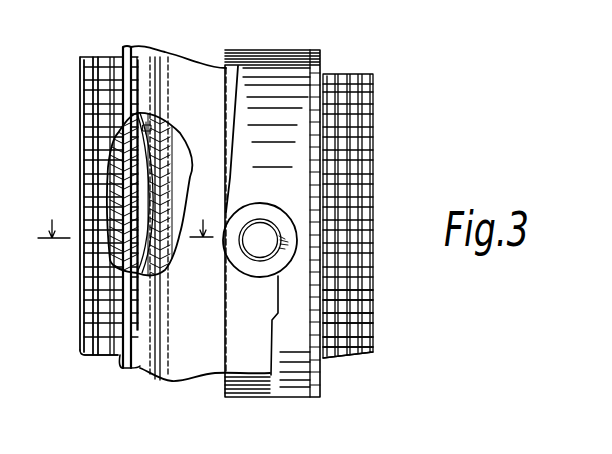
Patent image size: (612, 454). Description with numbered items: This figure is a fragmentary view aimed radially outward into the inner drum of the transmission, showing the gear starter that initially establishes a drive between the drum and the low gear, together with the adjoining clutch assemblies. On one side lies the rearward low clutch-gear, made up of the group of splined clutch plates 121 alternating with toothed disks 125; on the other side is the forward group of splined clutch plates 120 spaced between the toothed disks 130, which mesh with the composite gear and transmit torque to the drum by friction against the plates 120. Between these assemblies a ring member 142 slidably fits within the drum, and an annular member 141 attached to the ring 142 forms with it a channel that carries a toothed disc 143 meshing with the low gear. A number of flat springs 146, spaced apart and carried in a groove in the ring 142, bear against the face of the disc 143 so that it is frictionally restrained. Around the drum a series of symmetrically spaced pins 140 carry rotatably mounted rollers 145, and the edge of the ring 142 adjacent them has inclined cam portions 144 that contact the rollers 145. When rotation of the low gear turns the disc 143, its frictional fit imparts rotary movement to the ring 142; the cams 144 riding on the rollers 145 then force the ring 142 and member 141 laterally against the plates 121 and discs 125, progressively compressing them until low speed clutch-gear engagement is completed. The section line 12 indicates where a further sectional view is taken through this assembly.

The section line 12 is at (126, 215).
The clutch plates 120 is at (358, 355).
The clutch plates 121 is at (108, 53).
The toothed disks 125 is at (87, 55).
The toothed disks 130 is at (350, 73).
The pins 140 is at (263, 240).
The annular member 141 is at (110, 358).
The ring member 142 is at (187, 355).
The toothed disc 143 is at (138, 350).
The cam portions 144 is at (267, 346).
The rollers 145 is at (272, 263).
The flat springs 146 is at (168, 126).